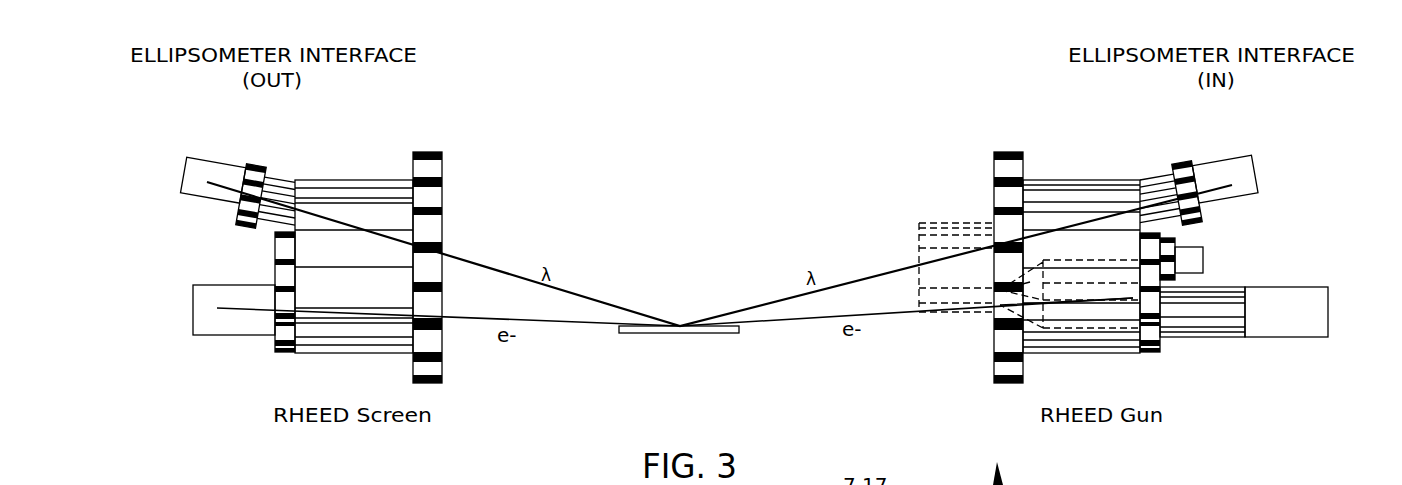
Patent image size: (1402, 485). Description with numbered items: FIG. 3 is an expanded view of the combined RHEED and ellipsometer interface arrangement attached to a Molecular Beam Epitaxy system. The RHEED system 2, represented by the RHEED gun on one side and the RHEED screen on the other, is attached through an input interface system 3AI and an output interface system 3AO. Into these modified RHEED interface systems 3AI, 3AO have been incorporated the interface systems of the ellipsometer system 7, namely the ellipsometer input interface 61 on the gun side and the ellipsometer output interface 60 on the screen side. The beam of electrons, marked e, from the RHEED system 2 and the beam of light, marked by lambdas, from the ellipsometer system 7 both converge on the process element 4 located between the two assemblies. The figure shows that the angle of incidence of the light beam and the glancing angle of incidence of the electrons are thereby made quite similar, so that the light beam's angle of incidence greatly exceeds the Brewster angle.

The output interface system 3AO is at (427, 90).
The input interface system 3AI is at (1013, 88).
The ellipsometer output interface system 60 is at (280, 175).
The ellipsometer input interface system 61 is at (1147, 172).
The ellipsometer system 7 is at (218, 165).
The RHEED system 2 is at (233, 325).
The process element 4 is at (733, 337).